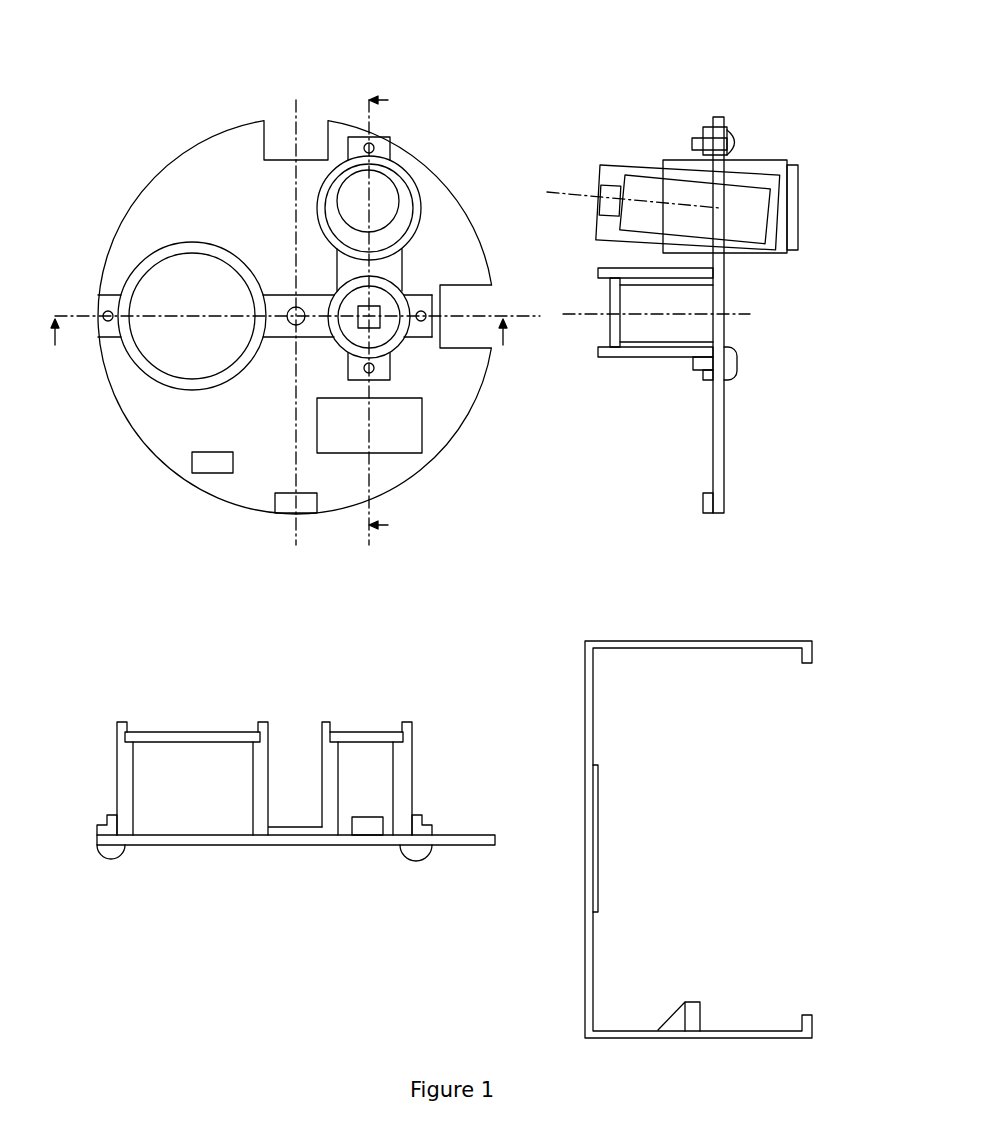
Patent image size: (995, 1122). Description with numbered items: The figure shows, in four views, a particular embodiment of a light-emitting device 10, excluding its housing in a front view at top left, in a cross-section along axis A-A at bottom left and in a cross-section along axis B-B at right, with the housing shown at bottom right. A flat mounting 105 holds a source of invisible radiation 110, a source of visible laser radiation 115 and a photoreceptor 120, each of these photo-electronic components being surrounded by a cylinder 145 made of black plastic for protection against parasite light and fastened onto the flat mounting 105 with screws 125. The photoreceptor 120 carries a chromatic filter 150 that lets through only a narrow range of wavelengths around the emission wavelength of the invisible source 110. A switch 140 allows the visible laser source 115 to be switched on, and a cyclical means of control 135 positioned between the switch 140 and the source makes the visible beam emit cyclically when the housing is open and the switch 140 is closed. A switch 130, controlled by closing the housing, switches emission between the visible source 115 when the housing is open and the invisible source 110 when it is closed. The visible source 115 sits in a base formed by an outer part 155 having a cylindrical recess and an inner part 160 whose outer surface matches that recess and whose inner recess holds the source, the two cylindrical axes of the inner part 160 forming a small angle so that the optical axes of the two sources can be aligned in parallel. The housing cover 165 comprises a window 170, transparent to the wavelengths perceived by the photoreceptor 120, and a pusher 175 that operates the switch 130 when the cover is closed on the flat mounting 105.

The light-emitting device 10 is at (218, 80).
The flat mounting 105 is at (182, 170).
The source of invisible radiation 110 is at (375, 320).
The source of visible laser radiation 115 is at (392, 201).
The photoreceptor 120 is at (178, 357).
The screws 125 is at (735, 363).
The switch 130 is at (305, 508).
The cyclical means of control 135 is at (398, 442).
The switch 140 is at (202, 463).
The cylinder 145 is at (145, 263).
The chromatic filter 150 is at (177, 733).
The outer part 155 is at (758, 165).
The inner part 160 is at (643, 167).
The housing cover 165 is at (590, 720).
The window 170 is at (598, 852).
The pusher 175 is at (693, 1010).